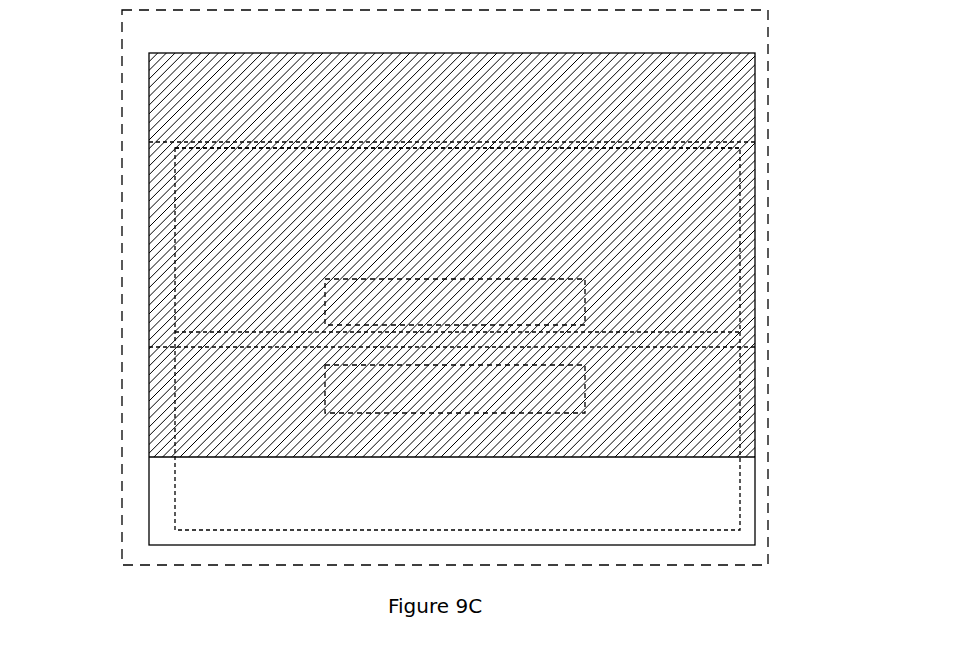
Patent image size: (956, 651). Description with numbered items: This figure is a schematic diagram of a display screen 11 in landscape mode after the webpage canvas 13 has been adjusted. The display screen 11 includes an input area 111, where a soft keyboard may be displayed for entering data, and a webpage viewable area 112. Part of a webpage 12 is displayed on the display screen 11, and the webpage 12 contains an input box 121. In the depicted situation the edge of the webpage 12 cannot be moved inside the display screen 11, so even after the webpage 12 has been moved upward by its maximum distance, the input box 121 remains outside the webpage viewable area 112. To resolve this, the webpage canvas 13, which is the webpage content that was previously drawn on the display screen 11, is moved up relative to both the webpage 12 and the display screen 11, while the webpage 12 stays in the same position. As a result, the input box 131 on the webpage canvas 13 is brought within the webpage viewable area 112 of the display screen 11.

The display screen 11 is at (757, 335).
The input area 111 is at (757, 430).
The webpage viewable area 112 is at (756, 240).
The webpage 12 is at (121, 285).
The input box 121 is at (455, 413).
The webpage canvas 13 is at (150, 238).
The input box on the webpage canvas 131 is at (455, 279).